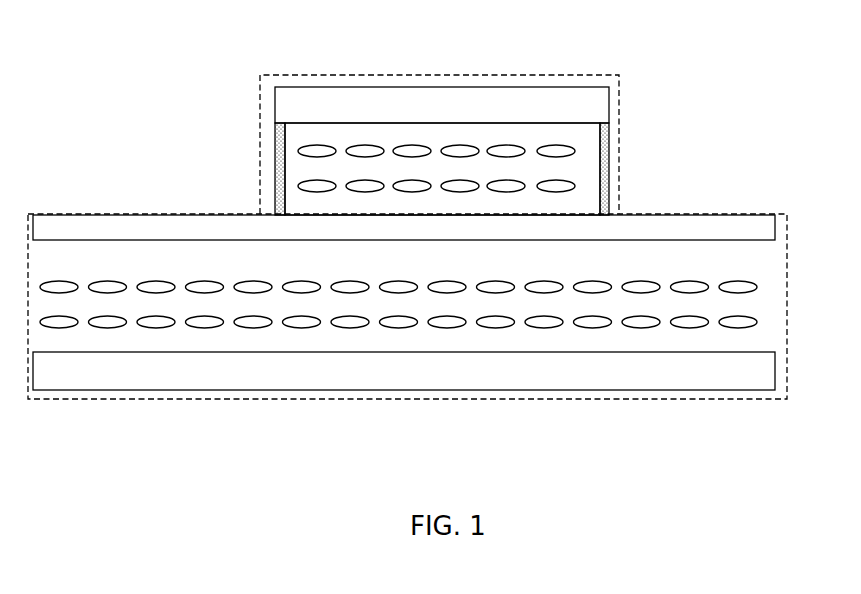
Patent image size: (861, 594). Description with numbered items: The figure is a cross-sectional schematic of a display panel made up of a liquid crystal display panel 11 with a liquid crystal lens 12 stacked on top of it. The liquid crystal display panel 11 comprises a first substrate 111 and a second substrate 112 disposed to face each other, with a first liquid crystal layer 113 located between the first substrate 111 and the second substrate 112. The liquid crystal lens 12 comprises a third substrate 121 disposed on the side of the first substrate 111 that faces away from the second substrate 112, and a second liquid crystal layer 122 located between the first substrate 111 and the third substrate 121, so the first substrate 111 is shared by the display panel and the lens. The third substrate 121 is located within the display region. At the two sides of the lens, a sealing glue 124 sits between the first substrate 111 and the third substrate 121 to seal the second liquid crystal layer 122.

The liquid crystal display panel 11 is at (672, 399).
The first substrate 111 is at (775, 227).
The second substrate 112 is at (777, 373).
The first liquid crystal layer 113 is at (775, 308).
The liquid crystal lens 12 is at (373, 75).
The third substrate 121 is at (610, 103).
The second liquid crystal layer 122 is at (495, 135).
The sealing glue 124 is at (610, 152).